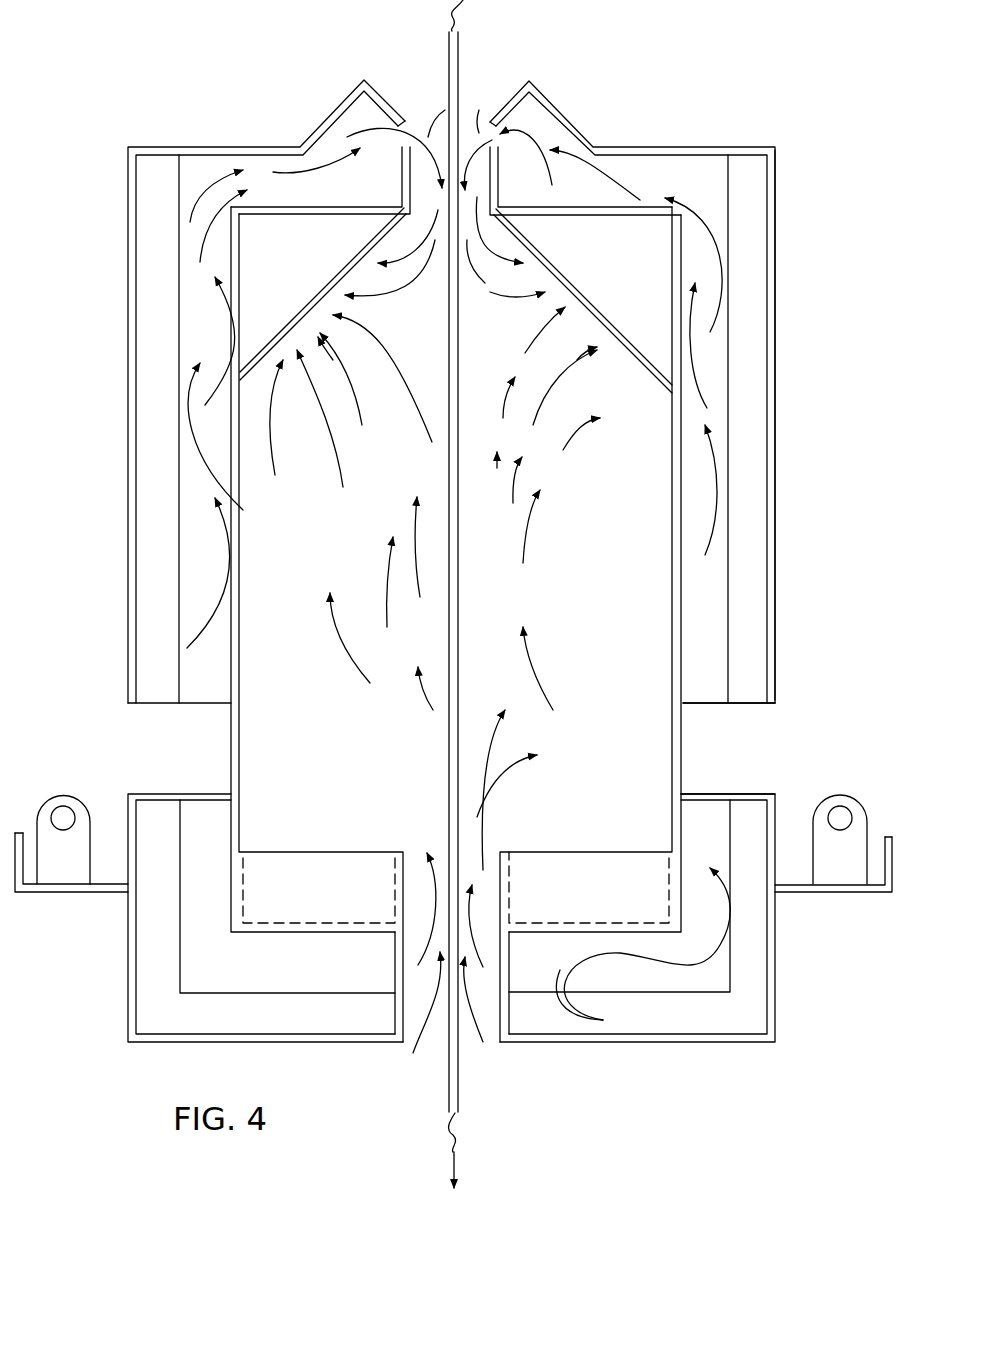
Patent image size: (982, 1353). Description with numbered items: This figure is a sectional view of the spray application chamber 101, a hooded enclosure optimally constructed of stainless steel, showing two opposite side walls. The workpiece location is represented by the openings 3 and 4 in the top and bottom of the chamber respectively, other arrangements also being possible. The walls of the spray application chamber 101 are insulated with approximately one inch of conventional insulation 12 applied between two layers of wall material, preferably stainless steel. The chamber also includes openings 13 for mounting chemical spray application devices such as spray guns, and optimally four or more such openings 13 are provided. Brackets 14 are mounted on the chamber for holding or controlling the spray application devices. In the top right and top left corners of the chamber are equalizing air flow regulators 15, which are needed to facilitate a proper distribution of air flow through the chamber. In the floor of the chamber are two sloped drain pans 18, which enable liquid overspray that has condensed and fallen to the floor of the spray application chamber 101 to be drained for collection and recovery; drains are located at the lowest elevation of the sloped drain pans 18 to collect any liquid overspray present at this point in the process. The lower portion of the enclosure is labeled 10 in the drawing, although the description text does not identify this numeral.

The opening 3 is at (460, 100).
The opening 4 is at (431, 1042).
The lower housing 10 is at (640, 1053).
The insulation 12 is at (747, 228).
The opening 13 is at (753, 752).
The bracket 14 is at (842, 897).
The equalizing air flow regulator 15 is at (308, 288).
The sloped drain pan 18 is at (300, 847).
The spray application chamber 101 is at (777, 272).